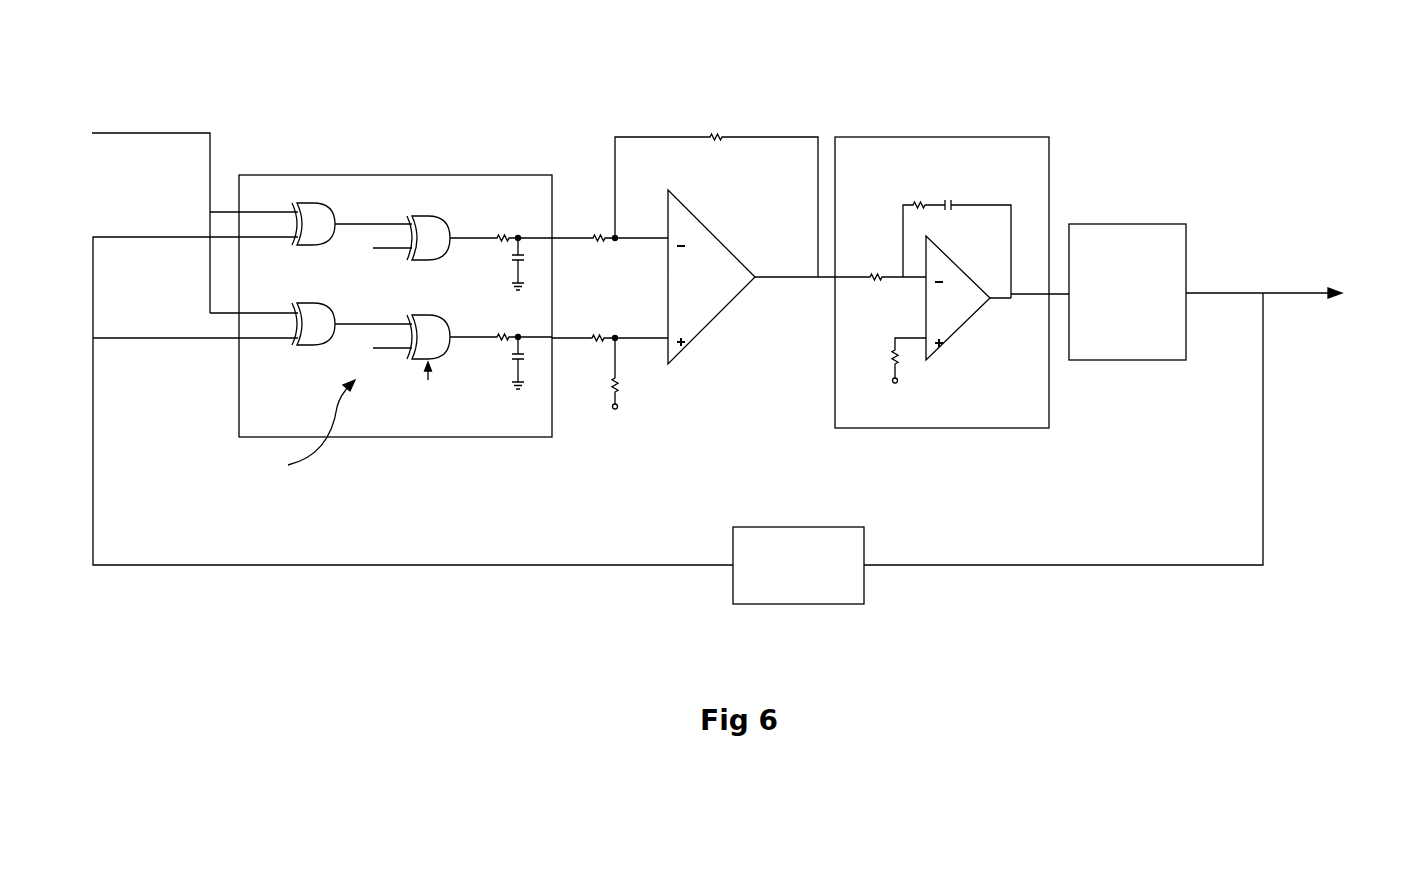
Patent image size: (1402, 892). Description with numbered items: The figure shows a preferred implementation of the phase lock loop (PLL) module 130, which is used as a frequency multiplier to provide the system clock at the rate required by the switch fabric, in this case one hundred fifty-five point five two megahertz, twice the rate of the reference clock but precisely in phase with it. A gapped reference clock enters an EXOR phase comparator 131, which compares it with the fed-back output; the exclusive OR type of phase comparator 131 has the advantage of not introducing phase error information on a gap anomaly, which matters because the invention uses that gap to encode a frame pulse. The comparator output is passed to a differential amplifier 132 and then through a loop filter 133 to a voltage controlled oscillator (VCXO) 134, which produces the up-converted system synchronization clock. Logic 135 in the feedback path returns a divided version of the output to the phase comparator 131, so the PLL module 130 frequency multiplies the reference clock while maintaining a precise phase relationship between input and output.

The phase lock loop module 130 is at (731, 306).
The EXOR phase comparator 131 is at (395, 175).
The differential amplifier 132 is at (727, 245).
The loop filter 133 is at (942, 137).
The voltage controlled oscillator (VCXO) 134 is at (1127, 224).
The logic 135 is at (798, 527).